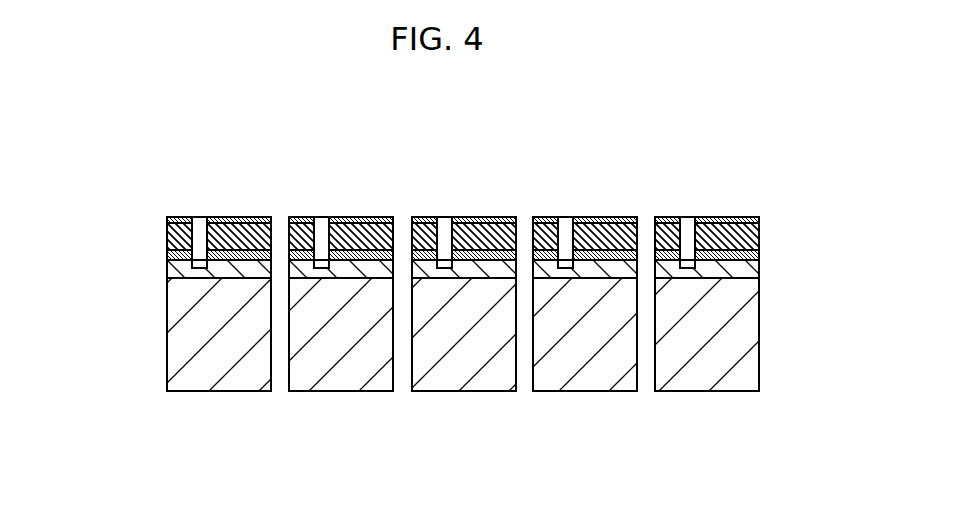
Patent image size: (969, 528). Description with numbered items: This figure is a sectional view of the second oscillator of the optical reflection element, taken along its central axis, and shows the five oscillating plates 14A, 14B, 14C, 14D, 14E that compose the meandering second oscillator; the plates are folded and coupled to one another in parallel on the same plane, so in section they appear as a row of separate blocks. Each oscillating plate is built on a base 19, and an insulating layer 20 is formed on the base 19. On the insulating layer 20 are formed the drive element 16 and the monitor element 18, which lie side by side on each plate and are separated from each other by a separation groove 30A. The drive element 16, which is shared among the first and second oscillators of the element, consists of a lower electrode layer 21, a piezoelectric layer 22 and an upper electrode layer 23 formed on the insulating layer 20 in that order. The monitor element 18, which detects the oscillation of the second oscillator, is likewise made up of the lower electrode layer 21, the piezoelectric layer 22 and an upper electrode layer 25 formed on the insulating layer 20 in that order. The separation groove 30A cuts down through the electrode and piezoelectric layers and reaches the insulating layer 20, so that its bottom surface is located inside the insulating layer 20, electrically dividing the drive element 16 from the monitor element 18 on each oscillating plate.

The oscillating plate 14A is at (655, 404).
The oscillating plate 14B is at (533, 404).
The oscillating plate 14C is at (412, 404).
The oscillating plate 14D is at (289, 404).
The oscillating plate 14E is at (167, 404).
The drive element 16 is at (293, 217).
The monitor element 18 is at (103, 202).
The base 19 is at (742, 328).
The insulating layer 20 is at (756, 276).
The lower electrode layer 21 is at (167, 255).
The piezoelectric layer 22 is at (167, 238).
The upper electrode layer 23 is at (745, 219).
The upper electrode layer 25 is at (167, 220).
The separation groove 30A is at (201, 238).